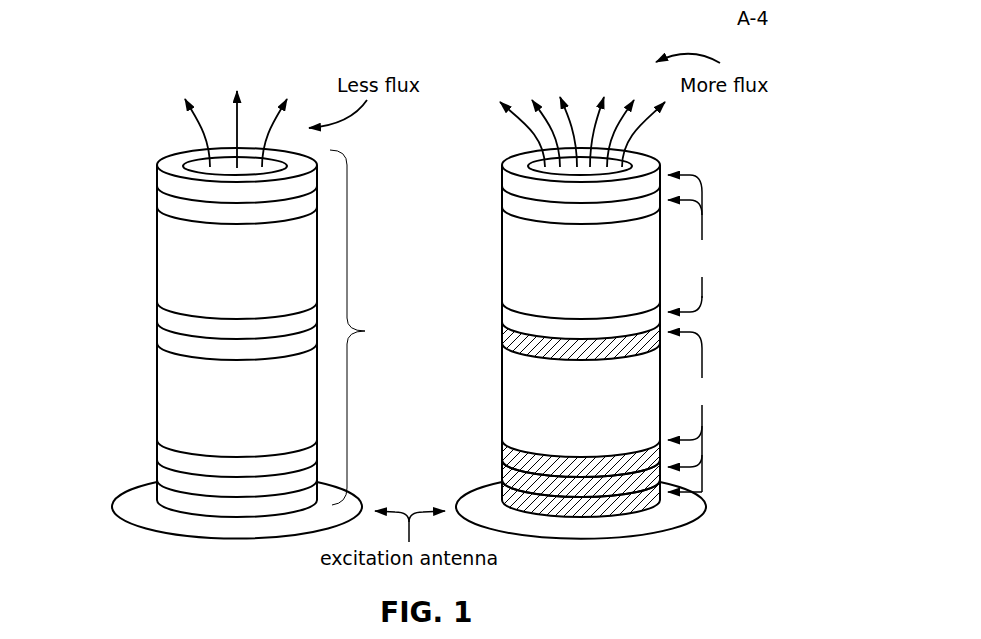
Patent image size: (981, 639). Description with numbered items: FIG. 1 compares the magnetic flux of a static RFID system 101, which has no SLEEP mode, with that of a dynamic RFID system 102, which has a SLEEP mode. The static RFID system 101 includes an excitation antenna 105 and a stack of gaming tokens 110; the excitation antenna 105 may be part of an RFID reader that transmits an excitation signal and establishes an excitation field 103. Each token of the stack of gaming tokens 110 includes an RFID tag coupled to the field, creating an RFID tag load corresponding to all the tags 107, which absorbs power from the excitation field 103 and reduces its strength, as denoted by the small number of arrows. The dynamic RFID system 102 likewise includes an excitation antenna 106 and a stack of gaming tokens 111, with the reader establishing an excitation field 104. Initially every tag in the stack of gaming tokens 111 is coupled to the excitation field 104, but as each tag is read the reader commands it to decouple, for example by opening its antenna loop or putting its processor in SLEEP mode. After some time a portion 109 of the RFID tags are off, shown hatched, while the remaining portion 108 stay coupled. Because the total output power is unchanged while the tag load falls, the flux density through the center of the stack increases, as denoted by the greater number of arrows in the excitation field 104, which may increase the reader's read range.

The static RFID system 101 is at (112, 59).
The dynamic RFID system 102 is at (484, 59).
The excitation field 103 is at (298, 85).
The excitation field 104 is at (665, 85).
The excitation antenna 105 is at (112, 507).
The excitation antenna 106 is at (705, 510).
The RFID tag load corresponding to all the tags 107 is at (438, 370).
The remaining portion of the RFID tags 108 is at (768, 266).
The portion of the RFID tags 109 is at (770, 392).
The stack of gaming tokens 110 is at (150, 251).
The stack of gaming tokens 111 is at (496, 251).